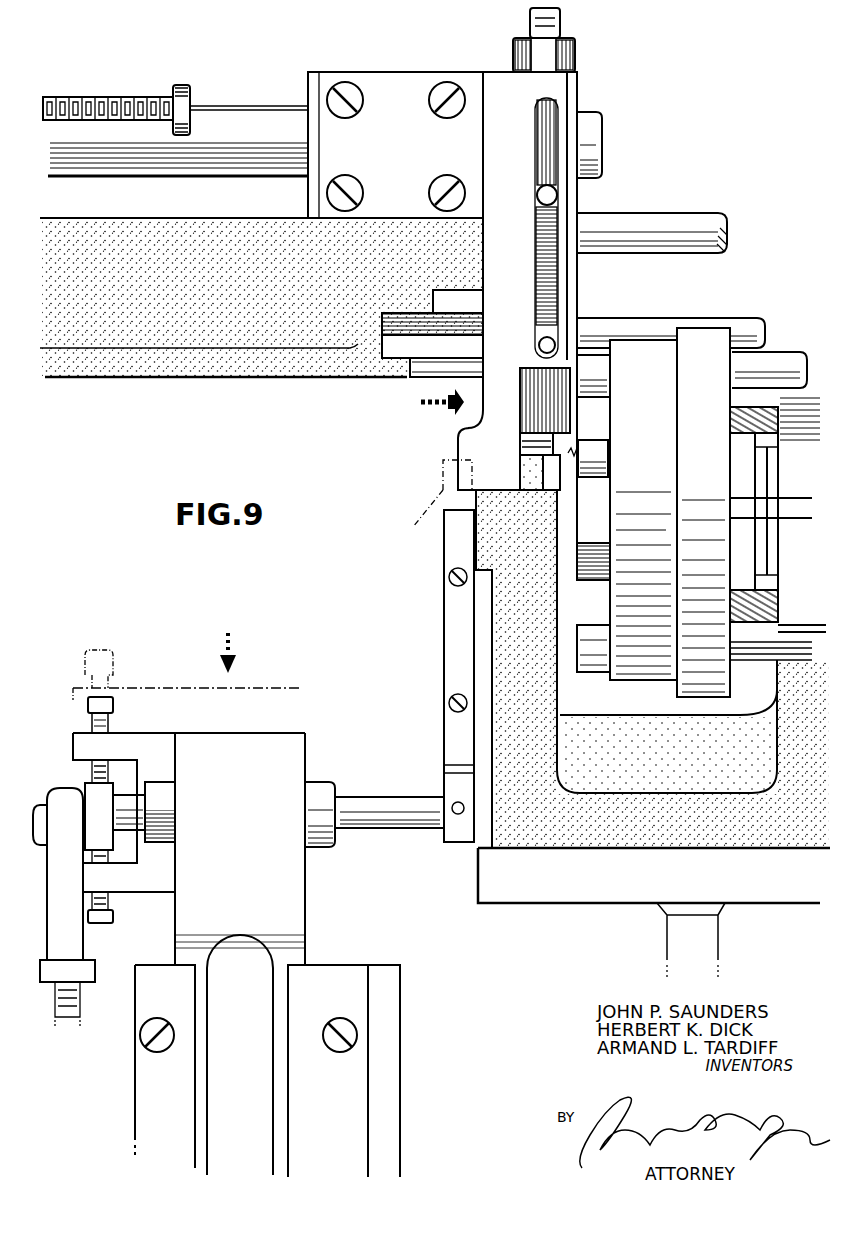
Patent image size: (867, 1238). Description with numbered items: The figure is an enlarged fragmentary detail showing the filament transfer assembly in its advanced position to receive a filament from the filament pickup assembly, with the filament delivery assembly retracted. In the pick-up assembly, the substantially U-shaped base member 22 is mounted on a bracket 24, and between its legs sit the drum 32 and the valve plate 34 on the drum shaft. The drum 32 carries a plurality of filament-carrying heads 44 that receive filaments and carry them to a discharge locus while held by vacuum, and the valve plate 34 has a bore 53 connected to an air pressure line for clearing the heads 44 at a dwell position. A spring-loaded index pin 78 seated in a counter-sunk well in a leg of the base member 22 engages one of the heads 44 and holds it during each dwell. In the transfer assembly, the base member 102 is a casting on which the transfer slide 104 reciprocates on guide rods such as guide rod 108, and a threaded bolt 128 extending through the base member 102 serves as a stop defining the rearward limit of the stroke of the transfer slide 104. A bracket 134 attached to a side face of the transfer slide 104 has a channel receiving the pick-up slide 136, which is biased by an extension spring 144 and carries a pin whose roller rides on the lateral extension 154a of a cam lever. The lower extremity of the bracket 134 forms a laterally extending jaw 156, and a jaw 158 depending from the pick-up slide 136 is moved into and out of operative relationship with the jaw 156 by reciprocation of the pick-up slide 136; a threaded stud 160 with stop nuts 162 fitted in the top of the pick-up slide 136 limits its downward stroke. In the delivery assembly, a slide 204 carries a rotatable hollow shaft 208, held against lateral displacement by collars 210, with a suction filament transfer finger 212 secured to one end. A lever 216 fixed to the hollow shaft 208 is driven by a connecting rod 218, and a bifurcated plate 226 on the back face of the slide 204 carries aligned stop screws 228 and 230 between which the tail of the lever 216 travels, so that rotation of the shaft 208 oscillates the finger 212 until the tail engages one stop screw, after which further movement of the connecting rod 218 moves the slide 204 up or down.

The threaded bolt 128 is at (103, 97).
The transfer slide 104 is at (389, 72).
The threaded stud 160 is at (562, 24).
The stop nuts 162 is at (578, 54).
The guide rod 108 is at (594, 132).
The extension spring 144 is at (577, 213).
The lateral extension of cam lever 154a is at (398, 320).
The base member 102 is at (247, 378).
The bracket 134 is at (455, 437).
The jaw 158 is at (520, 446).
The jaw 156 is at (540, 476).
The pick-up slide 136 is at (568, 408).
The filament-carrying heads 44 is at (598, 470).
The drum 32 is at (654, 412).
The valve plate 34 is at (712, 412).
The suction filament transfer finger 212 is at (444, 540).
The index pin 78 is at (586, 672).
The base member 22 is at (665, 716).
The bore 53 is at (760, 660).
The bracket 24 is at (585, 905).
The stop screw 228 is at (113, 720).
The bifurcated plate 226 is at (162, 740).
The lever 216 is at (85, 790).
The collars 210 is at (300, 800).
The hollow shaft 208 is at (396, 805).
The slide 204 is at (305, 918).
The stop screw 230 is at (113, 917).
The connecting rod 218 is at (80, 947).